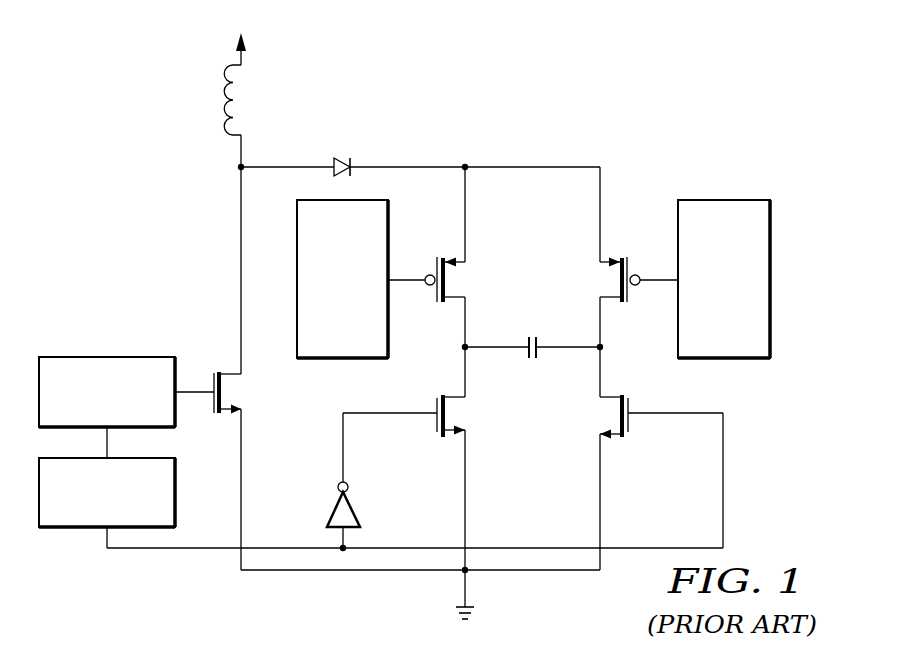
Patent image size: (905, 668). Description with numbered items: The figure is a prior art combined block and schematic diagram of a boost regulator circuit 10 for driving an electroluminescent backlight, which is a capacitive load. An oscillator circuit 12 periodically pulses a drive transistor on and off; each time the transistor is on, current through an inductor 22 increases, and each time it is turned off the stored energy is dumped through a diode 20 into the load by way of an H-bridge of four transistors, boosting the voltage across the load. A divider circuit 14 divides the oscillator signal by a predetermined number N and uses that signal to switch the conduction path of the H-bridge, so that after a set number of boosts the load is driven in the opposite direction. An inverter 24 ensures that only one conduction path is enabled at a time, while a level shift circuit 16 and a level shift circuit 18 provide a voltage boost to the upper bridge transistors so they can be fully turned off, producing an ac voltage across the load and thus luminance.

The boost regulator circuit 10 is at (701, 112).
The oscillator circuit 12 is at (108, 357).
The divider circuit 14 is at (76, 528).
The level shift circuit 16 is at (356, 340).
The level shift circuit 18 is at (738, 338).
The diode 20 is at (340, 160).
The inductor 22 is at (234, 101).
The inverter 24 is at (353, 507).